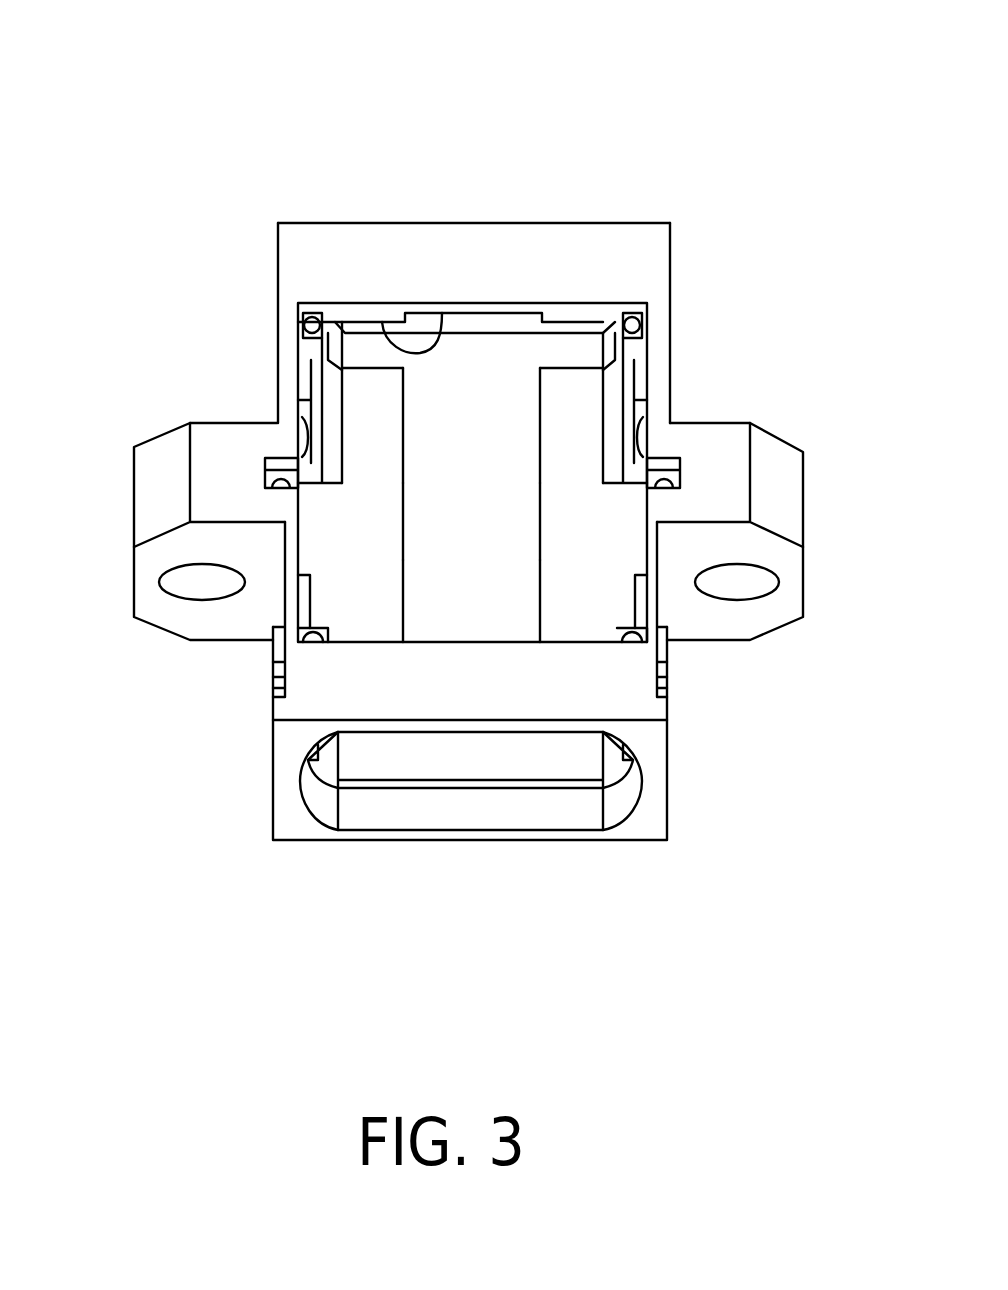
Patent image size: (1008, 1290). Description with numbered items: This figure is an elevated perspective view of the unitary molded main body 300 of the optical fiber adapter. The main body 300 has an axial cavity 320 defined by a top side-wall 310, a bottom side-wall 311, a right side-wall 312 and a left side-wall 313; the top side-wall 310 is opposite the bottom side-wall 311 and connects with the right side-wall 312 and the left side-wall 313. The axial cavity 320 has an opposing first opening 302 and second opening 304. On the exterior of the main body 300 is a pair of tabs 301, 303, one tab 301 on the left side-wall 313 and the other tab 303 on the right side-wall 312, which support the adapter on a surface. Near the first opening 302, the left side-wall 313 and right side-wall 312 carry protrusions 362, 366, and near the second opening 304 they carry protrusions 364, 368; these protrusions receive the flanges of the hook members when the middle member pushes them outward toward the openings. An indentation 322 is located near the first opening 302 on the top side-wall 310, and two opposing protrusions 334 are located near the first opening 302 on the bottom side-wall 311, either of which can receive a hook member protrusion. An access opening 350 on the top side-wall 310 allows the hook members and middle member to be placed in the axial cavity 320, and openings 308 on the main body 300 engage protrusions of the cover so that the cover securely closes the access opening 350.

The main body 300 is at (320, 116).
The tab 301 is at (220, 472).
The first opening 302 is at (528, 222).
The tab 303 is at (783, 562).
The second opening 304 is at (486, 752).
The openings 308 is at (335, 393).
The top side-wall 310 is at (340, 693).
The bottom side-wall 311 is at (505, 440).
The right side-wall 312 is at (672, 403).
The left side-wall 313 is at (277, 343).
The axial cavity 320 is at (480, 385).
The indentation 322 is at (382, 322).
The protrusions 334 is at (371, 400).
The access opening 350 is at (445, 518).
The protrusion 362 is at (325, 375).
The protrusion 364 is at (303, 605).
The protrusion 366 is at (612, 372).
The protrusion 368 is at (640, 607).